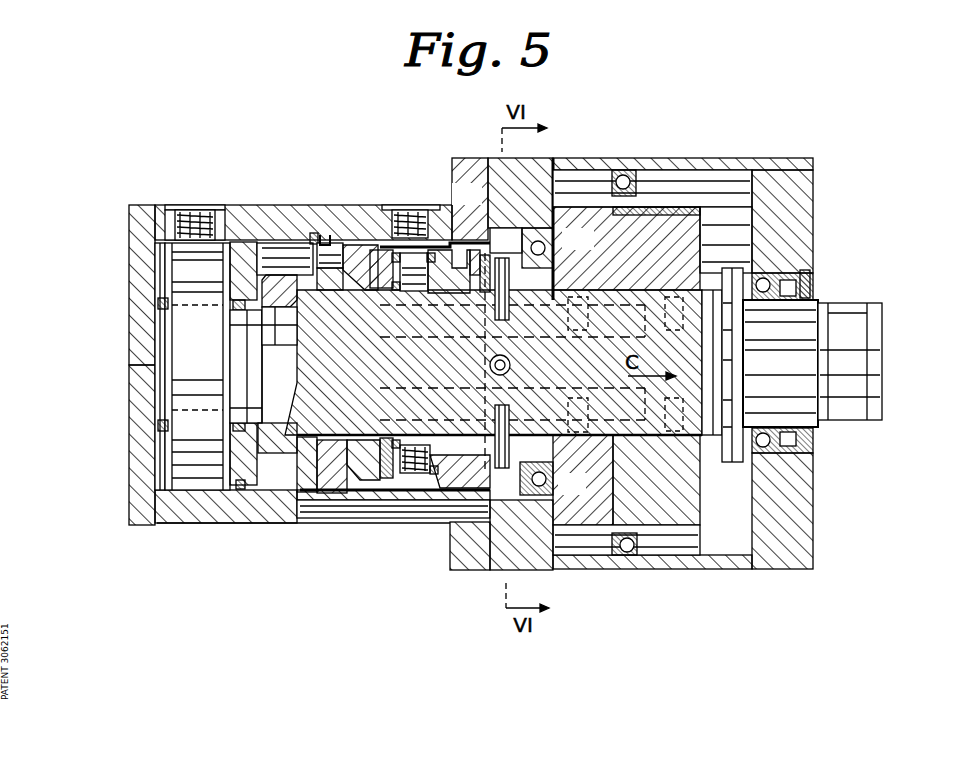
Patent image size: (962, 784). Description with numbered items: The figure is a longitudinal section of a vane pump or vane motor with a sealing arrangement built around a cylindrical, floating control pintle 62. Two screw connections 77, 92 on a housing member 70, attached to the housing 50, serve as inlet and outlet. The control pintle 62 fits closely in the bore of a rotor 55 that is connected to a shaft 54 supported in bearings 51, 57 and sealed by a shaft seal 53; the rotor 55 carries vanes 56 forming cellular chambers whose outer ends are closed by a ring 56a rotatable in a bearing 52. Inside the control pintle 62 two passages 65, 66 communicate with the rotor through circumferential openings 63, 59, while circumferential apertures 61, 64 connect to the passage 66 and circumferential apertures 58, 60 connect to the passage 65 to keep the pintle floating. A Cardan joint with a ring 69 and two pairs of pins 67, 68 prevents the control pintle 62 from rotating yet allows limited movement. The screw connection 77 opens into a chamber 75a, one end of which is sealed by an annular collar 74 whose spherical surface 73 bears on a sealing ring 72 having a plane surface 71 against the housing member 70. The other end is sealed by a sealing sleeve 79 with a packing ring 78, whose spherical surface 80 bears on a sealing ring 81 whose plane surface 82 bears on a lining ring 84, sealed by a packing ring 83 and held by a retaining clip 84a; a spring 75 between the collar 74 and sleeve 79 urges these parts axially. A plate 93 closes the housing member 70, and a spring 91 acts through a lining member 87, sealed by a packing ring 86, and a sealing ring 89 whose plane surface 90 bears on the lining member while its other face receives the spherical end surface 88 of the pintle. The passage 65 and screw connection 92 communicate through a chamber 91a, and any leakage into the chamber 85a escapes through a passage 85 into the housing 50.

The housing 50 is at (770, 558).
The bearing 51 is at (790, 500).
The bearing 52 is at (630, 172).
The shaft seal 53 is at (815, 450).
The shaft 54 is at (808, 385).
The rotor 55 is at (690, 245).
The vanes 56 is at (680, 212).
The ring 56a is at (655, 210).
The bearing 57 is at (543, 240).
The circumferential aperture 58 is at (700, 258).
The circumferential opening 59 is at (642, 232).
The circumferential aperture 60 is at (582, 290).
The circumferential aperture 61 is at (683, 440).
The control pintle 62 is at (238, 348).
The circumferential opening 63 is at (655, 445).
The circumferential aperture 64 is at (625, 500).
The passage 65 is at (560, 425).
The passage 66 is at (446, 212).
The pins 67 is at (500, 228).
The pins 68 is at (508, 372).
The ring 69 is at (516, 245).
The housing member 70 is at (502, 562).
The plane surface 71 is at (475, 530).
The sealing ring 72 is at (458, 505).
The surface 73 is at (450, 270).
The annular collar 74 is at (438, 273).
The spring 75 is at (415, 490).
The chamber 75a is at (385, 250).
The screw connection 77 is at (412, 212).
The packing ring 78 is at (392, 478).
The sealing sleeve 79 is at (355, 250).
The surface 80 is at (375, 462).
The sealing ring 81 is at (345, 250).
The plane surface 82 is at (352, 478).
The packing ring 83 is at (328, 244).
The lining ring 84 is at (320, 442).
The retaining clip 84a is at (316, 238).
The passage 85 is at (433, 510).
The chamber 85a is at (292, 262).
The packing ring 86 is at (240, 222).
The lining member 87 is at (240, 440).
The end surface 88 is at (238, 432).
The sealing ring 89 is at (273, 453).
The plane surface 90 is at (200, 523).
The spring 91 is at (150, 412).
The chamber 91a is at (175, 266).
The screw connection 92 is at (196, 228).
The plate 93 is at (147, 222).